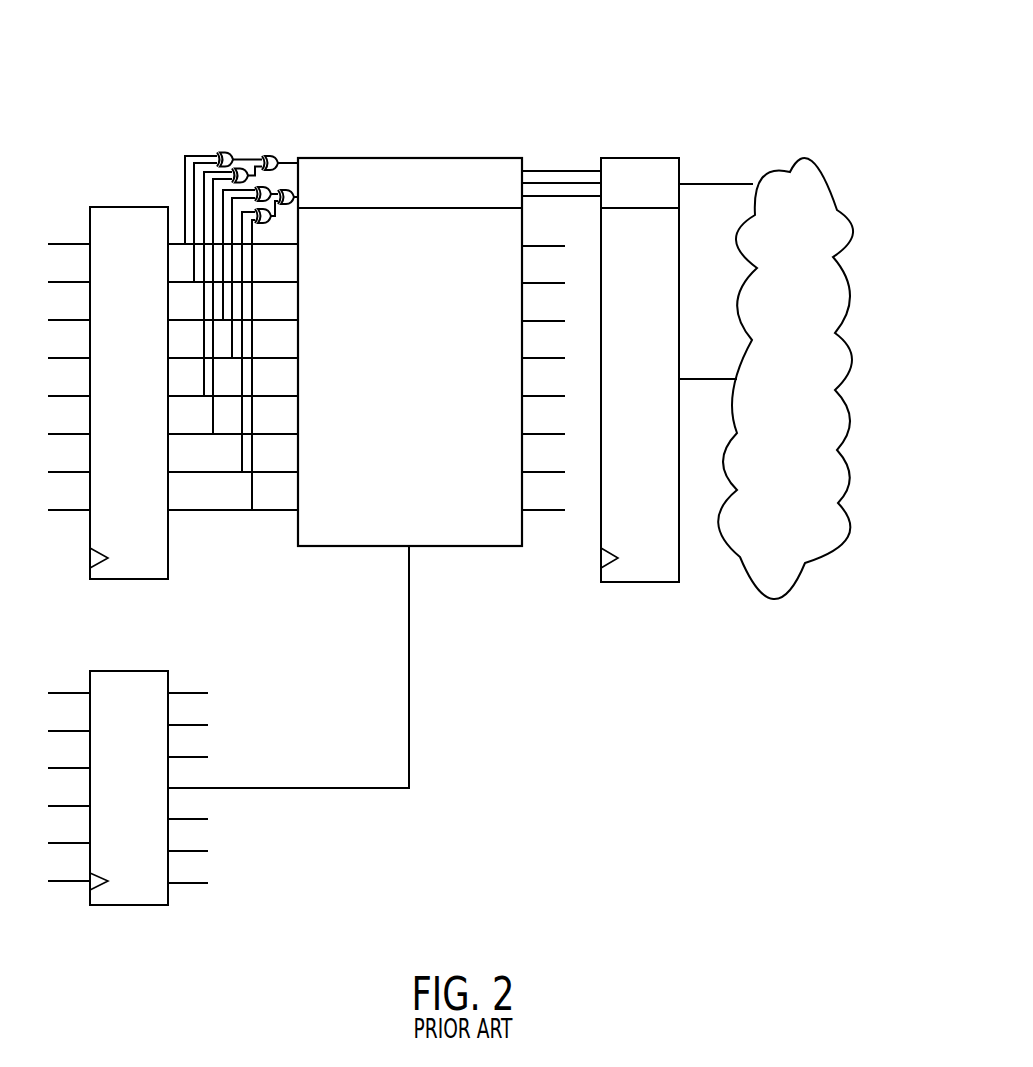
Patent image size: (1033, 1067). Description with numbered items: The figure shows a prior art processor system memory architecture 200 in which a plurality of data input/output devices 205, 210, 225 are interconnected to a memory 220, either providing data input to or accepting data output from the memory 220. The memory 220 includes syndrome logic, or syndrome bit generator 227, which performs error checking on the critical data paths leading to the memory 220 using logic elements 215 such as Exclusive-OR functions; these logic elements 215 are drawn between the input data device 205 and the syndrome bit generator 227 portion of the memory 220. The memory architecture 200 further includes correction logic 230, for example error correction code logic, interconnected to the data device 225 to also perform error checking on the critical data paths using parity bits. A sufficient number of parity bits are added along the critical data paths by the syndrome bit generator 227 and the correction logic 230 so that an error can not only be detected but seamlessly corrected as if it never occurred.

The processor system memory architecture 200 is at (560, 78).
The data input/output device 205 is at (125, 580).
The data input/output device 210 is at (125, 907).
The logic elements 215 is at (173, 146).
The memory 220 is at (449, 354).
The data input/output device 225 is at (638, 583).
The syndrome logic (bit generator) 227 is at (487, 157).
The correction logic 230 is at (813, 162).